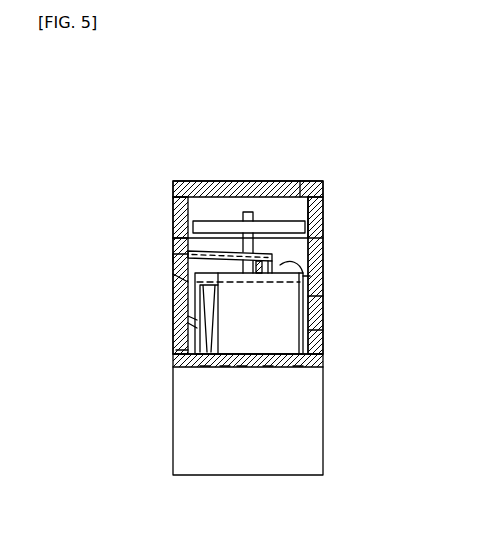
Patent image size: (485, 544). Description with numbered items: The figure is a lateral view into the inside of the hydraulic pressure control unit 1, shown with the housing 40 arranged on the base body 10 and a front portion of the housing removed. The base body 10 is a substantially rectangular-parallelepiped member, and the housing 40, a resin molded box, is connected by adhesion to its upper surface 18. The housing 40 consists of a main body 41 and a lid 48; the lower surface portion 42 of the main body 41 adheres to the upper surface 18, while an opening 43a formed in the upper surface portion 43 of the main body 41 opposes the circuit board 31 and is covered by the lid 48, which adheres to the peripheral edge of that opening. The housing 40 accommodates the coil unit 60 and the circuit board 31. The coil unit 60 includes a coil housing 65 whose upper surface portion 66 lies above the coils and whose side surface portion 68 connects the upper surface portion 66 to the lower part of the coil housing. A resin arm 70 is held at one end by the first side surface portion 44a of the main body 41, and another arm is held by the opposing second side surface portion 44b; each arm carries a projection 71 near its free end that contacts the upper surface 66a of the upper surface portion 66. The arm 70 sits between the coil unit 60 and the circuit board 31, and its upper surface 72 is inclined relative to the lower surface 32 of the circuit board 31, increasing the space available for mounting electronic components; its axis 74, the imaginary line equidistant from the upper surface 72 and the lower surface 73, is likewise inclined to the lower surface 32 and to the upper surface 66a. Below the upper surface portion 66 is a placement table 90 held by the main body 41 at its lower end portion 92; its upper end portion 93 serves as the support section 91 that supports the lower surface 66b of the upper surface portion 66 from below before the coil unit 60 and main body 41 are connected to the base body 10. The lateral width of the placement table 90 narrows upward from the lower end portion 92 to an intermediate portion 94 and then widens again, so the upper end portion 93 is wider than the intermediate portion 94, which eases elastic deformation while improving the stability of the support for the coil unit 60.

The hydraulic pressure control unit 1 is at (352, 127).
The base body 10 is at (315, 465).
The upper surface 18 is at (316, 340).
The circuit board 31 is at (268, 221).
The lower surface 32 is at (297, 272).
The housing 40 is at (233, 177).
The main body 41 is at (316, 303).
The lower surface portion 42 is at (298, 368).
The upper surface portion 43 is at (319, 220).
The opening 43a is at (319, 207).
The first side surface portion 44a is at (172, 250).
The second side surface portion 44b is at (316, 322).
The lid 48 is at (306, 189).
The coil unit 60 is at (268, 369).
The coil housing 65 is at (242, 368).
The upper surface portion 66 is at (310, 280).
The upper surface 66a is at (272, 275).
The lower surface 66b is at (197, 318).
The side surface portion 68 is at (290, 297).
The arm 70 is at (175, 201).
The projection 71 is at (298, 369).
The upper surface 72 is at (205, 252).
The lower surface 73 is at (173, 278).
The axis 74 is at (173, 258).
The placement table 90 is at (176, 356).
The support section 91 is at (197, 326).
The lower end portion 92 is at (225, 368).
The upper end portion 93 is at (203, 340).
The intermediate portion 94 is at (205, 368).